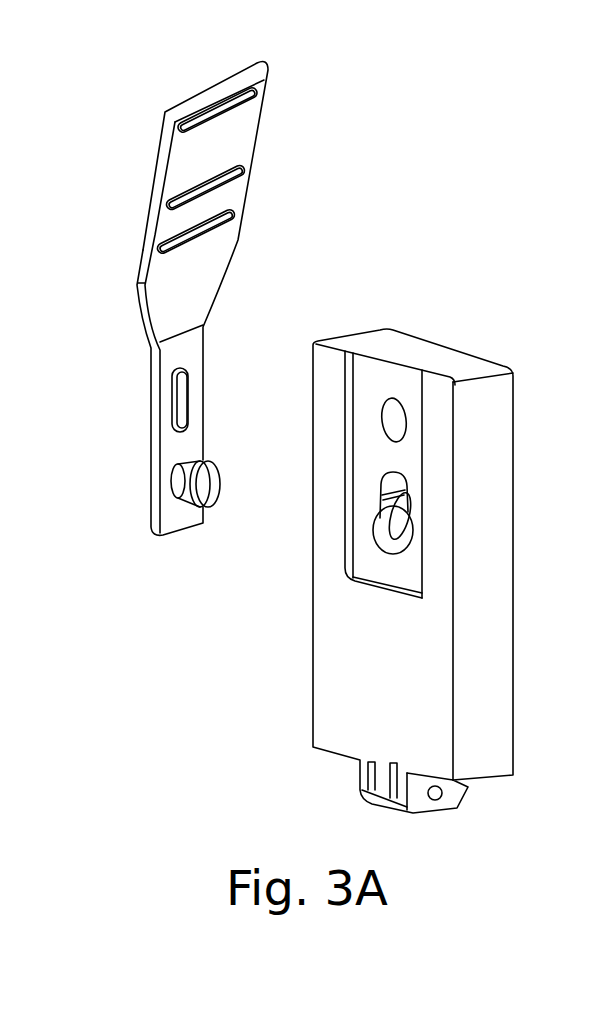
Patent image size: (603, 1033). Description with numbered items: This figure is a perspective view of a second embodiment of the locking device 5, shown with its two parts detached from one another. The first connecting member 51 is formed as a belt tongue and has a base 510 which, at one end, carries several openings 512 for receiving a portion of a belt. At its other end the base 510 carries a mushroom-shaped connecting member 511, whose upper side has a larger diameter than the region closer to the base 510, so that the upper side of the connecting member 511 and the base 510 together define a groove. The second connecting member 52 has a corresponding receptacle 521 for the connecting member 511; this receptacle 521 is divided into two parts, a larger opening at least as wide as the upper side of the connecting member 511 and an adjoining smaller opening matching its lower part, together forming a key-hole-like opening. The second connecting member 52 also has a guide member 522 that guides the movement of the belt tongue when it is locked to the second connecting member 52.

The locking device 5 is at (319, 436).
The base 510 is at (124, 265).
The first connecting member 51 is at (147, 181).
The connecting member 511 is at (208, 492).
The openings 512 is at (262, 96).
The second connecting member 52 is at (485, 463).
The receptacle 521 is at (417, 533).
The guide member 522 is at (393, 383).